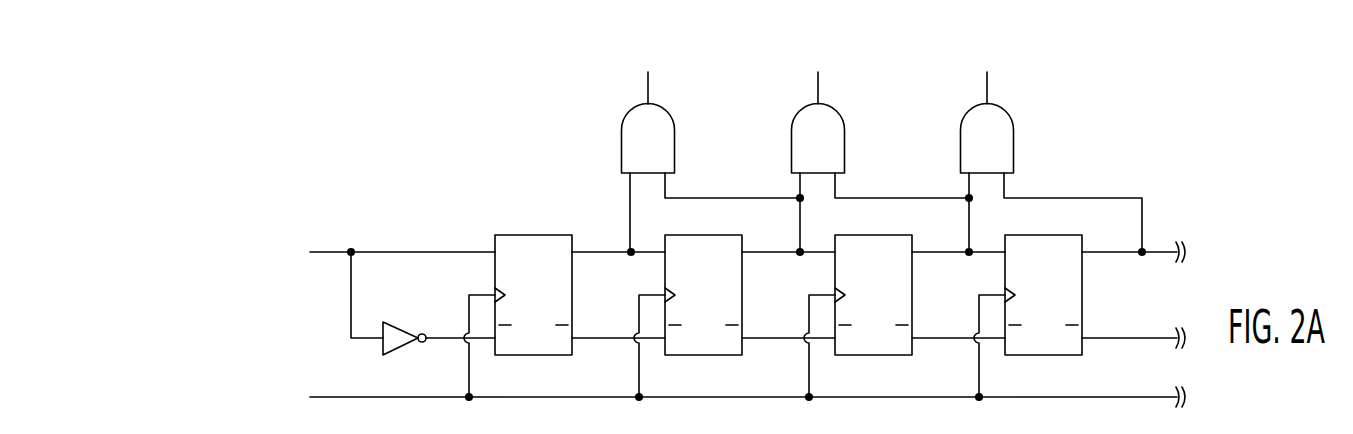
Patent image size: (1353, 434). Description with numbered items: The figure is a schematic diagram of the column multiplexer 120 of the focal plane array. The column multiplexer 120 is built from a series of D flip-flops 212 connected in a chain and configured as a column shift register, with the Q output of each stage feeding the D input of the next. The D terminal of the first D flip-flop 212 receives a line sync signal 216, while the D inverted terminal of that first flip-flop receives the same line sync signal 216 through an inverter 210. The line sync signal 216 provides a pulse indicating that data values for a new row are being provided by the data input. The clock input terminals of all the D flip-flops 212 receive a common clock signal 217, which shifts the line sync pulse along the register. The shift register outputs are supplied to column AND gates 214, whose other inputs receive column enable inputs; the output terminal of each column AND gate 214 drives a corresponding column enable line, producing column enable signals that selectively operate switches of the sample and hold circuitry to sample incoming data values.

The column multiplexer 120 is at (340, 93).
The inverter 210 is at (397, 324).
The D flip-flop 212 is at (547, 355).
The column AND gate 214 is at (662, 153).
The line sync signal 216 is at (220, 262).
The clock signal 217 is at (270, 392).